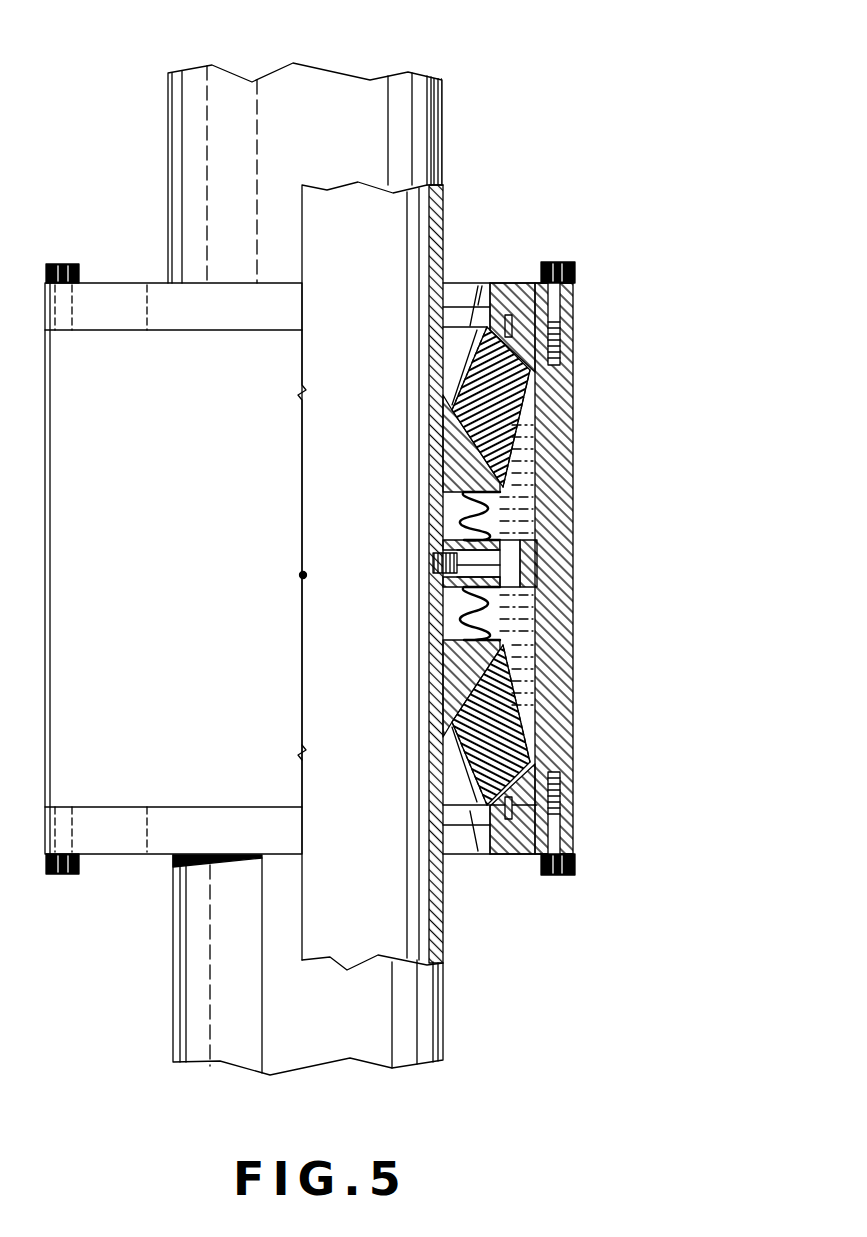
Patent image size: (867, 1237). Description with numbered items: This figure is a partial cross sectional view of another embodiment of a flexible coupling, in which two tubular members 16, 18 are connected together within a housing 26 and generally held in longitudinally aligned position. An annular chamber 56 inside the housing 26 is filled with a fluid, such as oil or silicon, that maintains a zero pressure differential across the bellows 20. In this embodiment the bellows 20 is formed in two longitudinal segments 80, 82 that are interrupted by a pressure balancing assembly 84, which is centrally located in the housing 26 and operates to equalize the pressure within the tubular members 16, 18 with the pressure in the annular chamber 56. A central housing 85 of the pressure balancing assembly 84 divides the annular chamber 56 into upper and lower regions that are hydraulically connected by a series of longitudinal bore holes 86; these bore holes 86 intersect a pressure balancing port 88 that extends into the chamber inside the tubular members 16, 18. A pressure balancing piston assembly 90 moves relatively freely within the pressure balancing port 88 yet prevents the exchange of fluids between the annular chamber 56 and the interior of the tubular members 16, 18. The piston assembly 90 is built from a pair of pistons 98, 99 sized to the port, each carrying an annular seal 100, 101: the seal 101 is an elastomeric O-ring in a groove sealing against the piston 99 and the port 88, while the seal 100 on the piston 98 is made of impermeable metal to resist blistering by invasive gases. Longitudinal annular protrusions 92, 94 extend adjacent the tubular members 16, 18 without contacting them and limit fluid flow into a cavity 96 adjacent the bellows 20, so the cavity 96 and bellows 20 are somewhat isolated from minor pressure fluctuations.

The tubular member 16 is at (442, 128).
The tubular member 18 is at (446, 1028).
The bellows 20 is at (417, 708).
The housing 26 is at (614, 325).
The annular chamber 56 is at (527, 513).
The longitudinal segment 80 is at (428, 507).
The longitudinal segment 82 is at (428, 653).
The pressure balancing assembly 84 is at (428, 600).
The central housing 85 is at (574, 617).
The bore holes 86 is at (549, 547).
The pressure balancing port 88 is at (423, 635).
The pressure balancing piston assembly 90 is at (428, 572).
The longitudinal annular protrusion 92 is at (430, 487).
The longitudinal annular protrusion 94 is at (416, 707).
The cavity 96 is at (428, 520).
The piston 98 is at (412, 597).
The piston 99 is at (537, 560).
The annular seal 100 is at (428, 613).
The annular seal 101 is at (418, 562).